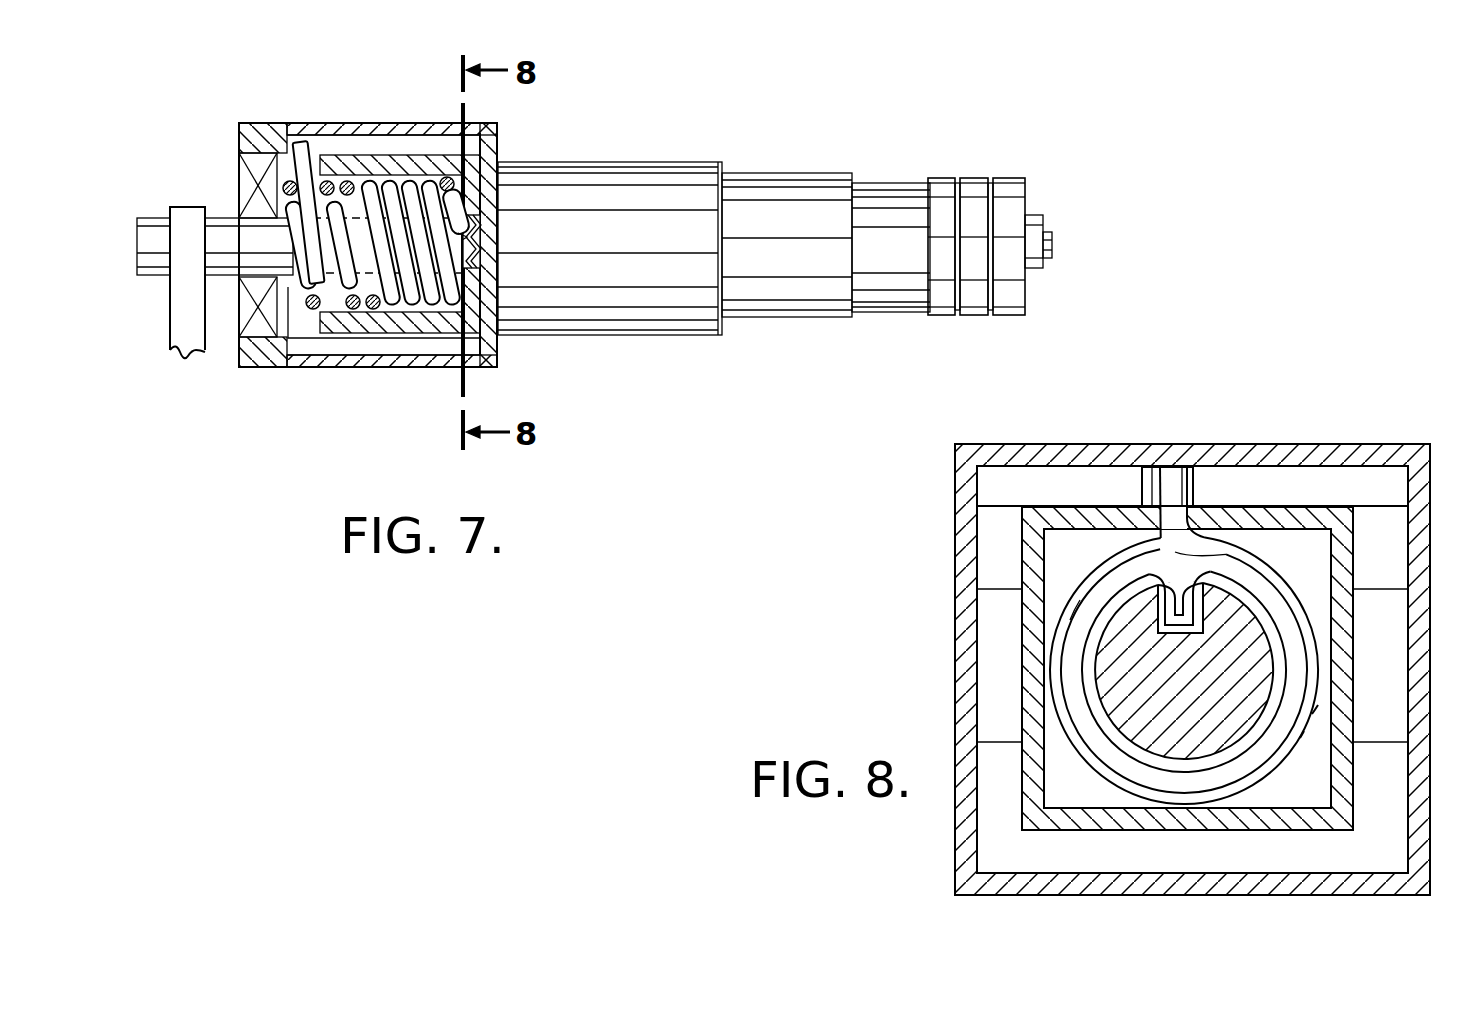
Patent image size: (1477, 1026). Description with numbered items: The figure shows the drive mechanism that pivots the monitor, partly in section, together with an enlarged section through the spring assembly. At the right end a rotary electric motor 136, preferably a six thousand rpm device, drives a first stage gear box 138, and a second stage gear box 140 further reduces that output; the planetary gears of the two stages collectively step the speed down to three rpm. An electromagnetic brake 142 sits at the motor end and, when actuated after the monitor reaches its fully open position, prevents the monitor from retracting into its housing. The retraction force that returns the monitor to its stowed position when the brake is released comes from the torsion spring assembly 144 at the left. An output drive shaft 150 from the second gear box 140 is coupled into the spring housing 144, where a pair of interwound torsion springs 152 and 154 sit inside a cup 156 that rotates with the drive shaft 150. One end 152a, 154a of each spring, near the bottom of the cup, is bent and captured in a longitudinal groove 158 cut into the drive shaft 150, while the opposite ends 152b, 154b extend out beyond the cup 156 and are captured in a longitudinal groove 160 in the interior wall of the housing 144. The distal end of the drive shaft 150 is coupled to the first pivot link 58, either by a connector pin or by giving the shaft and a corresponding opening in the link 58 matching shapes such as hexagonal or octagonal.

In FIG. 7, the first pivot link 58 is at (168, 302).
In FIG. 7, the rotary electric motor 136 is at (892, 182).
In FIG. 7, the first stage gear box 138 is at (785, 170).
In FIG. 7, the second stage gear box 140 is at (608, 160).
In FIG. 7, the electromagnetic brake 142 is at (1022, 160).
In FIG. 7, the torsion spring assembly 144 is at (355, 130).
In FIG. 8, the torsion spring assembly 144 is at (1322, 434).
In FIG. 7, the output drive shaft 150 is at (498, 203).
In FIG. 8, the output drive shaft 150 is at (1234, 605).
In FIG. 7, the torsion spring 152 is at (393, 300).
In FIG. 8, the torsion spring 152 is at (1312, 715).
In FIG. 8, the spring end 152a is at (1152, 596).
In FIG. 8, the spring end 152b is at (1197, 470).
In FIG. 7, the torsion spring 154 is at (295, 300).
In FIG. 8, the torsion spring 154 is at (1300, 738).
In FIG. 8, the spring end 154a is at (1166, 568).
In FIG. 8, the spring end 154b is at (1180, 487).
In FIG. 7, the cup 156 is at (345, 157).
In FIG. 8, the cup 156 is at (1059, 517).
In FIG. 8, the longitudinal groove 158 is at (1158, 631).
In FIG. 8, the longitudinal groove 160 is at (1150, 488).